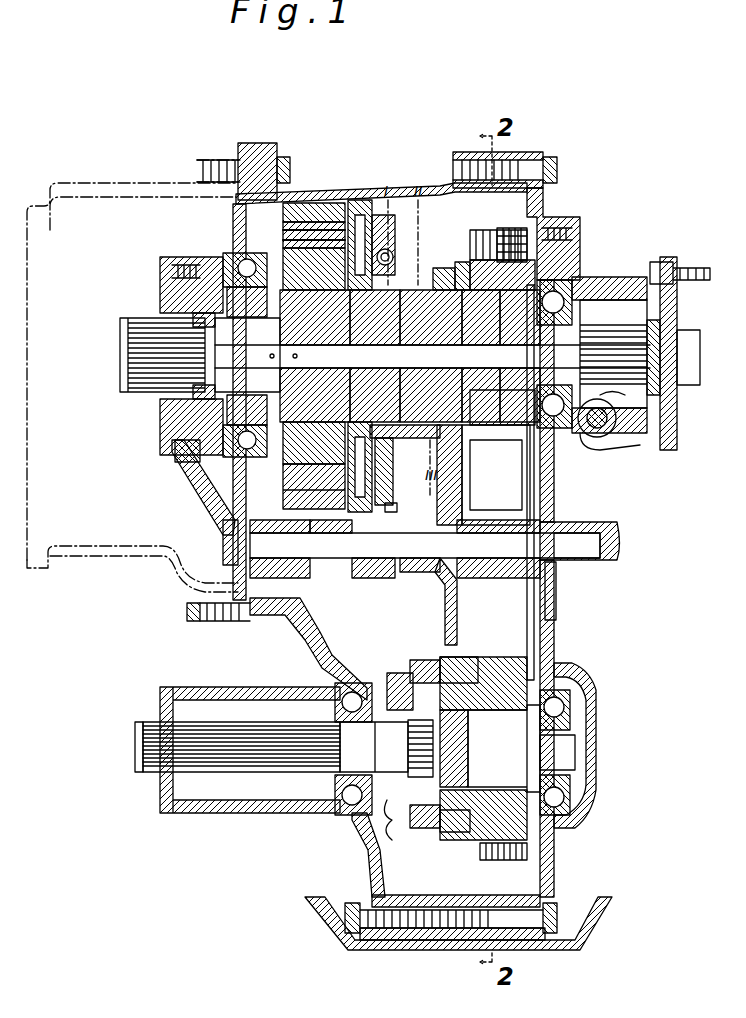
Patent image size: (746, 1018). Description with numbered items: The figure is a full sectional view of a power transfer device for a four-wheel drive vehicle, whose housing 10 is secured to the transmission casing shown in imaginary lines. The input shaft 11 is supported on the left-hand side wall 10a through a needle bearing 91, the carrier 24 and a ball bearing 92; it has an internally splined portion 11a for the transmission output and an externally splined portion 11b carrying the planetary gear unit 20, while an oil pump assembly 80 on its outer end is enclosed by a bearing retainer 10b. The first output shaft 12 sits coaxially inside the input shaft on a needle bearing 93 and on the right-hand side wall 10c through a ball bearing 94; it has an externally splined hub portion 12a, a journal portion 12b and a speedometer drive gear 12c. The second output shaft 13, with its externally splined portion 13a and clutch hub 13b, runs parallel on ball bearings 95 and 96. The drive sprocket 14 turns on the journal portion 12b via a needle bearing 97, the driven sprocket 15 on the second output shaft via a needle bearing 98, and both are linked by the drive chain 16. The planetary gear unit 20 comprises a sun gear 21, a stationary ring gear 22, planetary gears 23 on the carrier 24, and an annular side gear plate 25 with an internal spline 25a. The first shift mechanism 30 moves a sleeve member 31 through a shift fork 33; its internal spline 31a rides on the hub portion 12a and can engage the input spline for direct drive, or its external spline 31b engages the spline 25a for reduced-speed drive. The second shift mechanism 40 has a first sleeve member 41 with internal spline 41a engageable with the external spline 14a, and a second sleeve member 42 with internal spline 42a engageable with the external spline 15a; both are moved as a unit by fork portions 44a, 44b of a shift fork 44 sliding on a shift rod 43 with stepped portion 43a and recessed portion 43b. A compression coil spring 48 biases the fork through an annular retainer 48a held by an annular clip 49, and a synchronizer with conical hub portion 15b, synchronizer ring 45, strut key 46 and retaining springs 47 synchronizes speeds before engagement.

The housing 10 is at (315, 645).
The left-hand side wall 10a is at (246, 483).
The bearing retainer 10b is at (214, 505).
The right-hand side wall 10c is at (557, 495).
The input shaft 11 is at (150, 388).
The internally splined portion 11a is at (120, 350).
The externally splined portion 11b is at (315, 356).
The first output shaft 12 is at (672, 360).
The externally splined hub portion 12a is at (429, 356).
The journal portion 12b is at (588, 354).
The drive gear for a speedometer 12c is at (598, 292).
The second output shaft 13 is at (135, 745).
The externally splined portion 13a is at (155, 778).
The clutch hub 13b is at (410, 800).
The drive sprocket 14 is at (498, 452).
The external spline 14a is at (462, 262).
The driven sprocket 15 is at (505, 648).
The external spline 15a is at (462, 836).
The conical hub portion 15b is at (458, 790).
The drive chain 16 is at (500, 230).
The planetary gear unit 20 is at (362, 210).
The sun gear 21 is at (313, 447).
The stationary ring gear 22 is at (312, 203).
The planetary gears 23 is at (340, 205).
The carrier 24 is at (180, 438).
The annular side gear plate 25 is at (385, 215).
The internal spline 25a is at (390, 263).
The first shift mechanism 30 is at (393, 471).
The sleeve member 31 is at (393, 440).
The internal spline 31a is at (375, 356).
The external spline 31b is at (314, 477).
The shift fork 33 is at (403, 513).
The second shift mechanism 40 is at (423, 577).
The first sleeve member 41 is at (438, 272).
The internal spline 41a is at (470, 356).
The second sleeve member 42 is at (422, 830).
The internal spline 42a is at (450, 836).
The shift rod 43 is at (500, 560).
The stepped portion 43a is at (340, 560).
The recessed portion 43b is at (372, 560).
The shift fork 44 is at (470, 520).
The fork portion 44a is at (447, 497).
The fork portion 44b is at (445, 592).
The synchronizer ring 45 is at (445, 658).
The strut key 46 is at (398, 672).
The retaining springs 47 is at (420, 665).
The compression coil spring 48 is at (522, 482).
The annular retainer 48a is at (556, 588).
The annular clip 49 is at (562, 562).
The oil pump assembly 80 is at (190, 262).
The needle bearing 91 is at (273, 356).
The ball bearing 92 is at (200, 465).
The needle bearing 93 is at (247, 356).
The ball bearing 94 is at (575, 285).
The ball bearing 95 is at (350, 815).
The ball bearing 96 is at (582, 675).
The needle bearing 97 is at (515, 356).
The needle bearing 98 is at (490, 708).